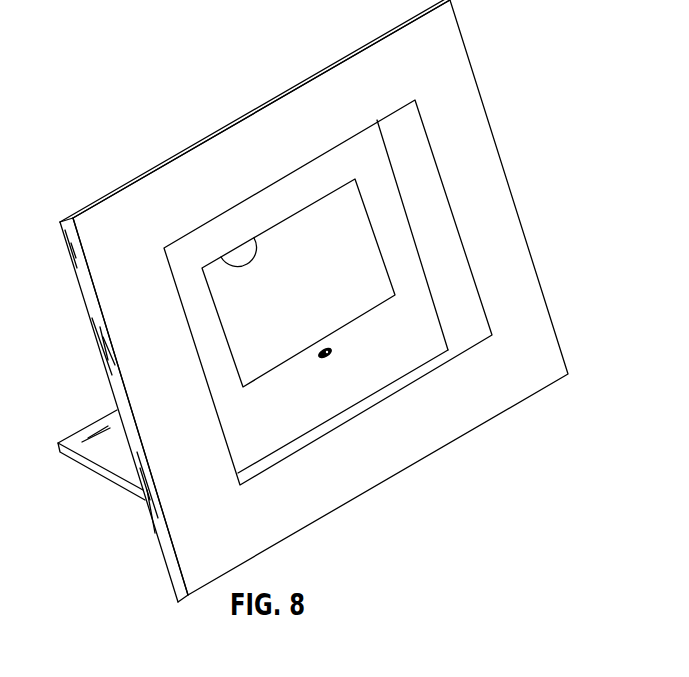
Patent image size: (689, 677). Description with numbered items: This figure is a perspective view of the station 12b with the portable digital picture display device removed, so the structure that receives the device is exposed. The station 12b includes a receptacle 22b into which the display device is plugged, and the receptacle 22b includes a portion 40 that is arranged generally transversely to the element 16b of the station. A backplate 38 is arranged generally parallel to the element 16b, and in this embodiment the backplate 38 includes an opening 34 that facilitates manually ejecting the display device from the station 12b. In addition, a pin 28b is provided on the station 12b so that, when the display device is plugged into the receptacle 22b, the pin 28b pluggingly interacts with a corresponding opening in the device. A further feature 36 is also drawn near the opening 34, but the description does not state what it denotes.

The portable electronic device housing 12b is at (510, 90).
The front face 16b is at (532, 292).
The bezel frame 22b is at (467, 312).
The button 28b is at (325, 360).
The display window 34 is at (307, 208).
The notch 36 is at (250, 243).
The frame bottom wall 38 is at (402, 320).
The frame side wall 40 is at (435, 247).